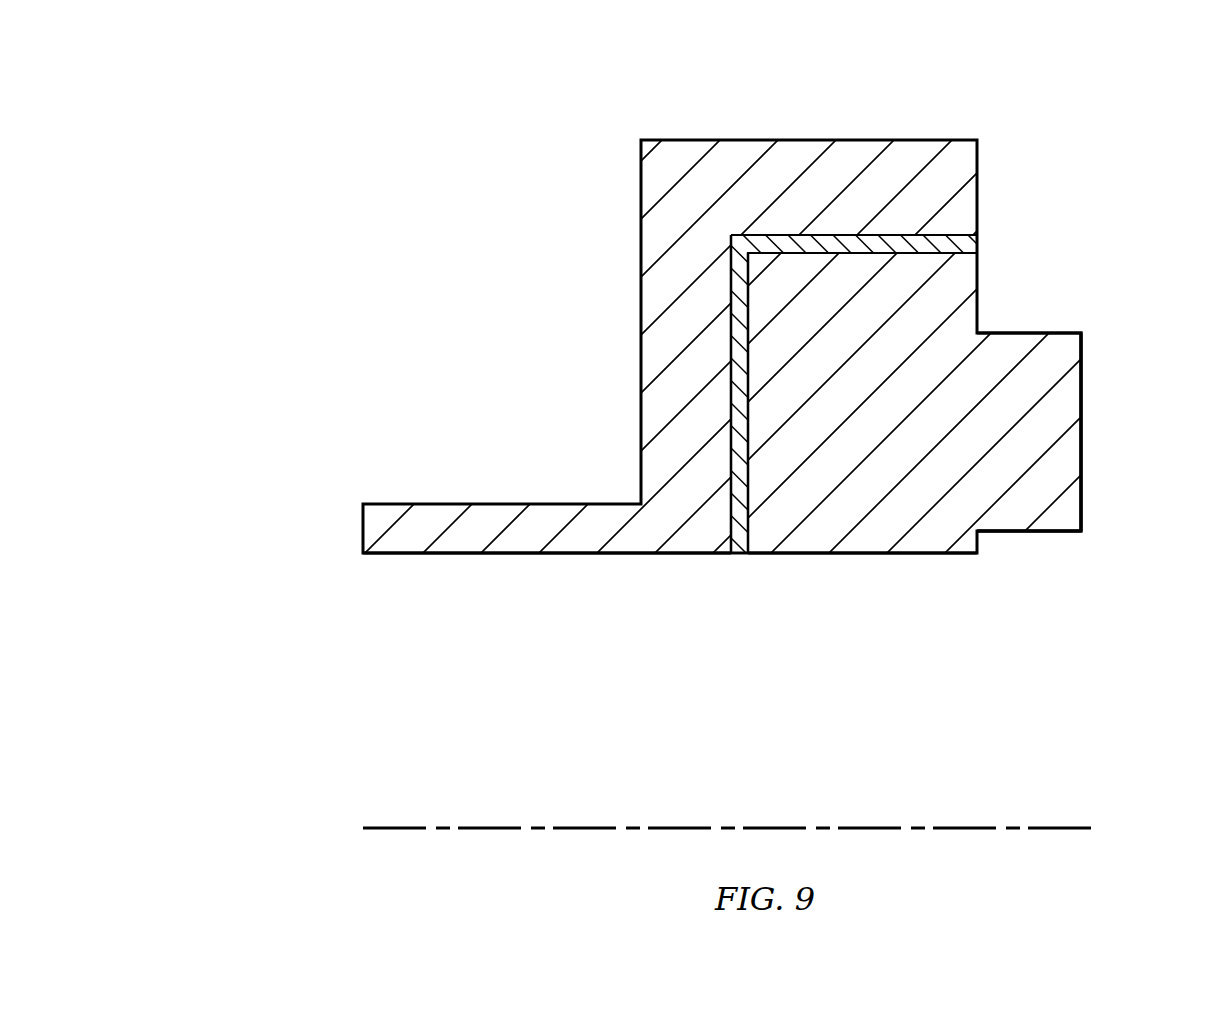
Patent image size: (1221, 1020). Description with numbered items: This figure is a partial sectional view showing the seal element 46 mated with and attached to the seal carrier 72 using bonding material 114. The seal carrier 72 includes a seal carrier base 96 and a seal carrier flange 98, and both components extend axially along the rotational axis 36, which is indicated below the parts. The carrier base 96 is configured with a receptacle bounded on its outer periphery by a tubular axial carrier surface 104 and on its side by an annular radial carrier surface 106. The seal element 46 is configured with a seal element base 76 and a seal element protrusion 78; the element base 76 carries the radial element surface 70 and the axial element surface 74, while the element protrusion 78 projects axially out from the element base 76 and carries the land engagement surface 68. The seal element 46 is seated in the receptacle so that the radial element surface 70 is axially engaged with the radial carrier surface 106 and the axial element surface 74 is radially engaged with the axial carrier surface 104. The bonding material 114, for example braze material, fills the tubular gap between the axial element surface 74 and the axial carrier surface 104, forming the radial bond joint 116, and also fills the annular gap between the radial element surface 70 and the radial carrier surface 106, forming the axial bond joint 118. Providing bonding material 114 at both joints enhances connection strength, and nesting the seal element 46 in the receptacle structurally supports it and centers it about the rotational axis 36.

The seal carrier 72 is at (646, 104).
The seal element 46 is at (1089, 318).
The bonding material 114 is at (983, 242).
The radial bond joint 116 is at (853, 234).
The axial bond joint 118 is at (727, 362).
The axial element surface 74 is at (926, 237).
The axial carrier surface 104 is at (951, 254).
The radial carrier surface 106 is at (737, 495).
The radial element surface 70 is at (735, 520).
The land engagement surface 68 is at (1082, 432).
The seal element base 76 is at (917, 562).
The seal element protrusion 78 is at (1031, 541).
The seal carrier base 96 is at (659, 564).
The seal carrier flange 98 is at (510, 562).
The rotational axis 36 is at (1085, 828).